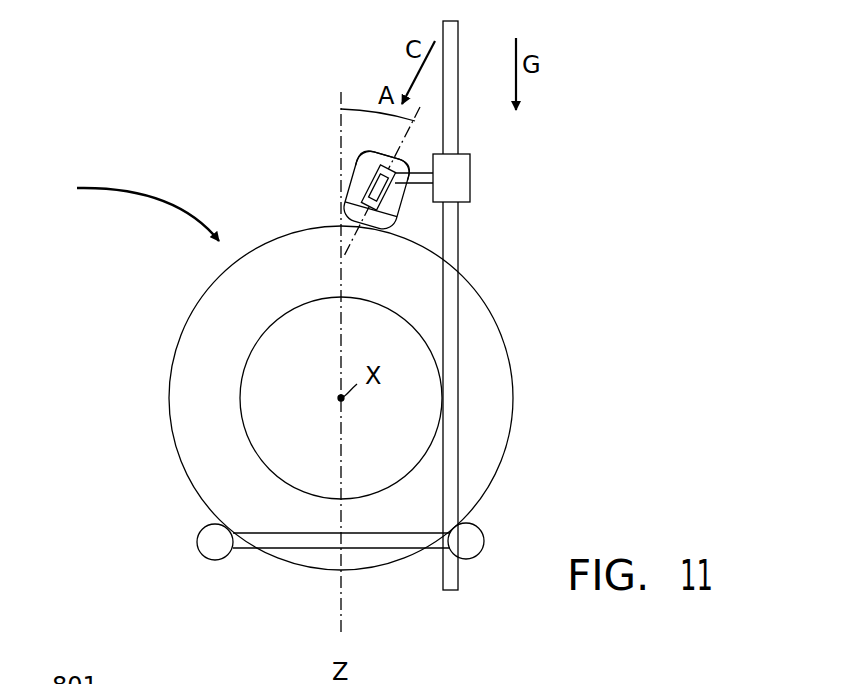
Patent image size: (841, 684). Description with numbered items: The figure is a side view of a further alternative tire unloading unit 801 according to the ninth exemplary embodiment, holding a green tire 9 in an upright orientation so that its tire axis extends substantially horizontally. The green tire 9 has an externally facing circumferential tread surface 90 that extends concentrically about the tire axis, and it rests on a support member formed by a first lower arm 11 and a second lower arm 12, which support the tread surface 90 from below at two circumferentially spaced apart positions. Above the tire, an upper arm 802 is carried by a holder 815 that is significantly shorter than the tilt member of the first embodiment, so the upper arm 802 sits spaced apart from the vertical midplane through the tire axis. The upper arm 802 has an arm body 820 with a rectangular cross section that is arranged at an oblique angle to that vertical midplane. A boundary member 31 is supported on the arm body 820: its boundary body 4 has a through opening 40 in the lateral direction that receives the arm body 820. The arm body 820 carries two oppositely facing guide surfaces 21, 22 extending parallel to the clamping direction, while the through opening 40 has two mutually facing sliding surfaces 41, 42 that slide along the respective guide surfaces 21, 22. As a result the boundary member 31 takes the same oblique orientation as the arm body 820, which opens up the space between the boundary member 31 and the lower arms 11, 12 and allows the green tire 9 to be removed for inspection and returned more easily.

The further alternative tire unloading unit 801 is at (114, 96).
The upper arm 802 is at (340, 173).
The arm body 820 is at (360, 163).
The holder 815 is at (433, 156).
The guide surface 21 is at (362, 162).
The guide surface 22 is at (436, 198).
The boundary member 31 is at (395, 212).
The boundary body 4 is at (346, 212).
The through opening 40 is at (377, 212).
The sliding surface 41 is at (345, 191).
The sliding surface 42 is at (423, 252).
The green tire 9 is at (195, 382).
The circumferential tread surface 90 is at (208, 288).
The first lower arm 11 is at (213, 541).
The second lower arm 12 is at (462, 541).